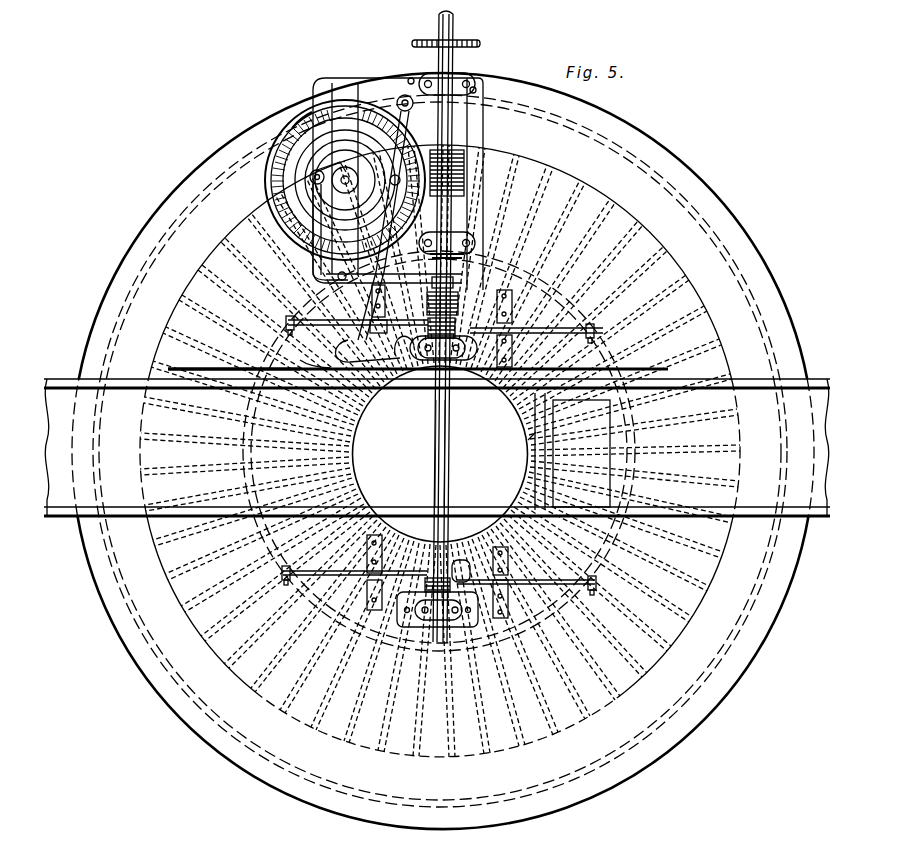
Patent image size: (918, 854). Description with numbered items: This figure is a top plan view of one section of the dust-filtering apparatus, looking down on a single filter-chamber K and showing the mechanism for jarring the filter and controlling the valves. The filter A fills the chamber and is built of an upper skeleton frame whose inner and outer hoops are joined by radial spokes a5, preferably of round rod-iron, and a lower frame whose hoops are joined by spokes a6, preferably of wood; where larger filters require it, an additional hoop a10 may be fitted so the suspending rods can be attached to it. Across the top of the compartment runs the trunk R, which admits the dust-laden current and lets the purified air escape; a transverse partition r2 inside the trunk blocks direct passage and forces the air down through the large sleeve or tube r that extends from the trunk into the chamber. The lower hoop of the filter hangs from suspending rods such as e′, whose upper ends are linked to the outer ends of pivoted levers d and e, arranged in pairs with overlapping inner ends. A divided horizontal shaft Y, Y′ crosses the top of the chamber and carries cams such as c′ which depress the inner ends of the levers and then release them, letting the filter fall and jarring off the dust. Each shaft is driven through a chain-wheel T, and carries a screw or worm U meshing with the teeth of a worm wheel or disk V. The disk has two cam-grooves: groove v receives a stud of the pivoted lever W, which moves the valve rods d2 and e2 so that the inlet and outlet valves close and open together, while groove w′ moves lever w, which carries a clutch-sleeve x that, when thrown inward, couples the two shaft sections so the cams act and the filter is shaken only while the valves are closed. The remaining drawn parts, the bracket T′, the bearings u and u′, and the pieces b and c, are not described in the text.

The filter A is at (655, 210).
The filter-chamber K is at (428, 806).
The trunk R is at (760, 408).
The sleeve or tube r is at (440, 454).
The transverse partition r2 is at (530, 432).
The radial spokes of upper frame a5 is at (498, 708).
The spokes of lower frame a6 is at (424, 700).
The additional hoop a10 is at (250, 426).
The shaft section Y is at (456, 213).
The shaft section Y′ is at (447, 446).
The chain-wheel T is at (476, 48).
The bracket box T′ is at (572, 451).
The screw or worm U is at (470, 150).
The upper bearing u is at (437, 175).
The lower bearing u′ is at (470, 278).
The worm wheel or disk V is at (266, 182).
The cam-groove v is at (308, 248).
The pivoted lever W is at (411, 110).
The lever w is at (310, 284).
The cam-groove w′ is at (312, 158).
The clutch-sleeve x is at (442, 307).
The bracket b is at (497, 316).
The pivoted arm or lever d is at (553, 576).
The valve rod d2 is at (645, 368).
The pivoted arm or lever e is at (305, 576).
The valve rod e2 is at (175, 364).
The suspending rod e′ is at (315, 369).
The collar c is at (486, 558).
The cam c′ is at (345, 648).